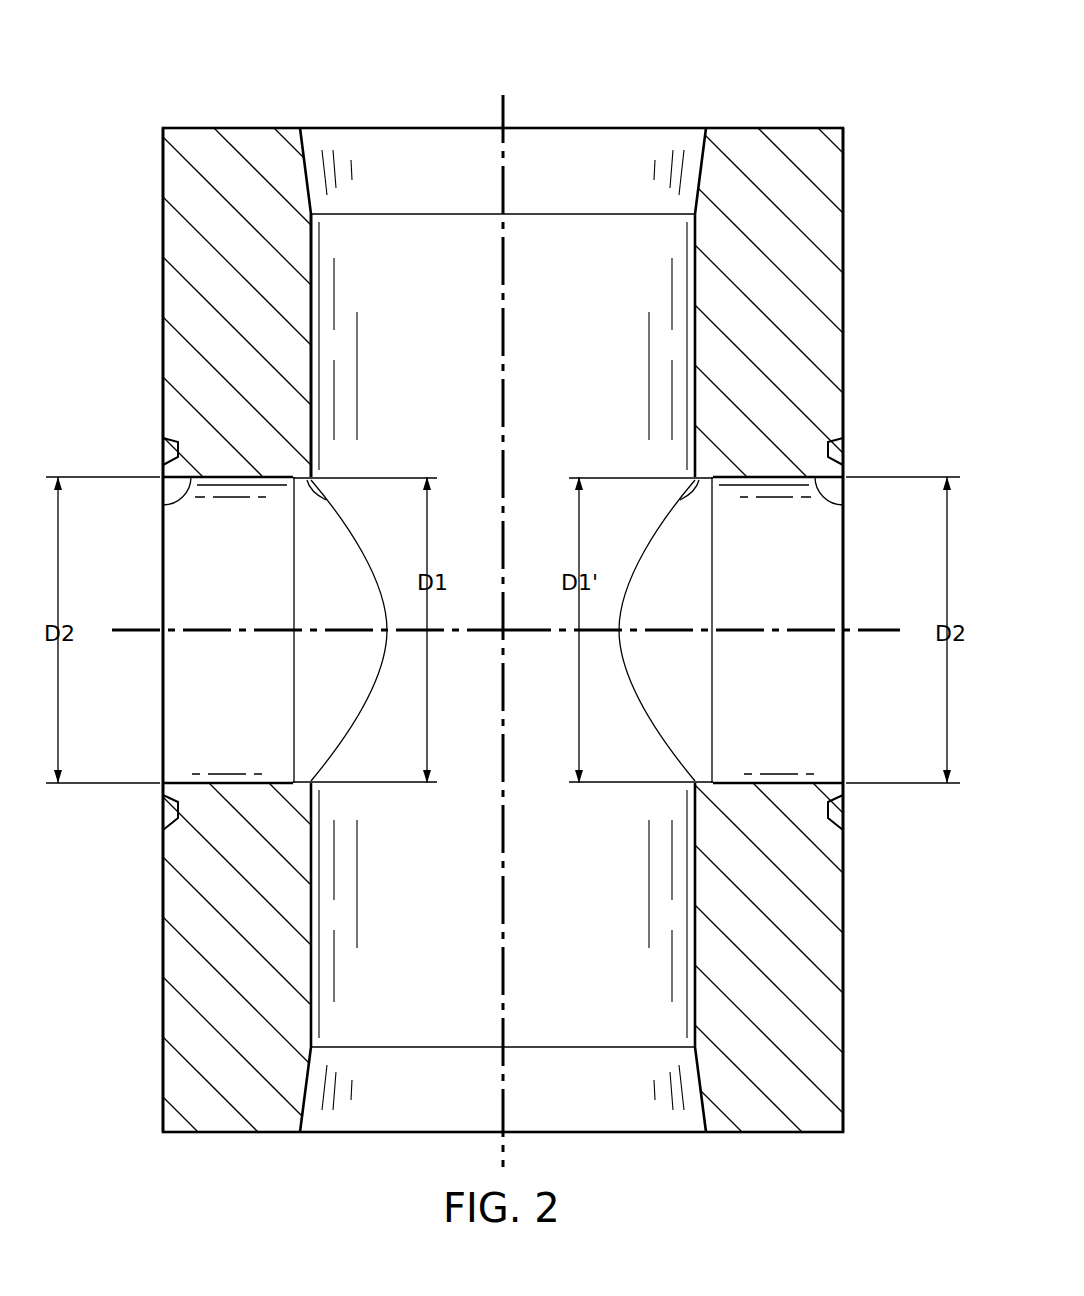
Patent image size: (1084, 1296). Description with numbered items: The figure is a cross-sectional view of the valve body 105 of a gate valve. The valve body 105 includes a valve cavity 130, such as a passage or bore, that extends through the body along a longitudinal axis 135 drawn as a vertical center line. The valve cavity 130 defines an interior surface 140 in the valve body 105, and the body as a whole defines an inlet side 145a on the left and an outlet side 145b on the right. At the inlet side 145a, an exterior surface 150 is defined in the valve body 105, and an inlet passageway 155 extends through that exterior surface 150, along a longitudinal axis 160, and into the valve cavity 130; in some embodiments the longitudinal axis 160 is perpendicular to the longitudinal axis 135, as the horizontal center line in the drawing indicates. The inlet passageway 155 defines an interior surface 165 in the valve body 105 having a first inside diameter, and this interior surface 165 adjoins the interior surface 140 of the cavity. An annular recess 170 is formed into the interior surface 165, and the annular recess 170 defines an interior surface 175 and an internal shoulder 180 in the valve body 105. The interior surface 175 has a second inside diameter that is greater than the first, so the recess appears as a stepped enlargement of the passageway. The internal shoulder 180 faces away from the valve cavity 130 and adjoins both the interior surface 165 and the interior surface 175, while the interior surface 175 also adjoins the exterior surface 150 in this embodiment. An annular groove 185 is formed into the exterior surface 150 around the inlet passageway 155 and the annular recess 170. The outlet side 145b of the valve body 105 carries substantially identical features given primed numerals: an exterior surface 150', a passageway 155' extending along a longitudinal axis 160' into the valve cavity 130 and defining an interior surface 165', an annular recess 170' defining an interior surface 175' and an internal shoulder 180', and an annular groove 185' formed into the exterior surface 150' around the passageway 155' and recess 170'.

The valve body 105 is at (190, 60).
The longitudinal axis 135 is at (502, 103).
The inlet side 145a is at (131, 366).
The outlet side 145b is at (875, 366).
The interior surface 140 is at (313, 355).
The valve cavity 130 is at (456, 390).
The annular groove 185 is at (131, 445).
The annular groove 185' is at (880, 445).
The interior surface 175 is at (138, 499).
The interior surface 175' is at (877, 499).
The internal shoulder 180 is at (242, 510).
The internal shoulder 180' is at (763, 510).
The interior surface 165 is at (361, 501).
The interior surface 165' is at (648, 501).
The longitudinal axis 160 is at (295, 660).
The longitudinal axis 160' is at (718, 660).
The inlet passageway 155 is at (275, 630).
The passageway 155' is at (731, 630).
The annular recess 170 is at (227, 748).
The annular recess 170' is at (779, 748).
The exterior surface 150 is at (132, 834).
The exterior surface 150' is at (880, 834).